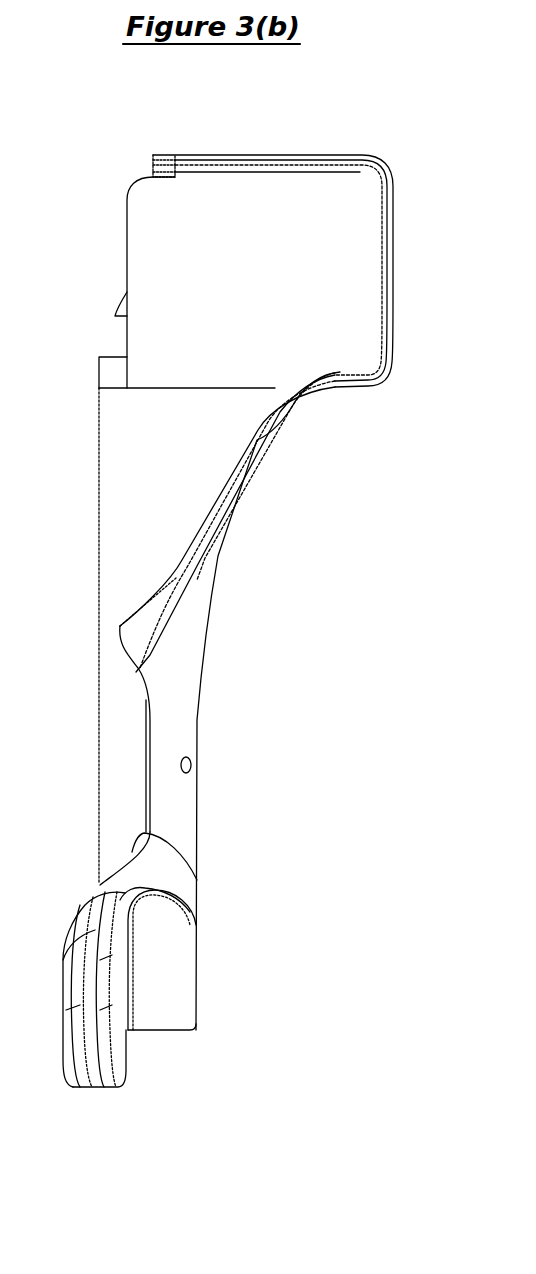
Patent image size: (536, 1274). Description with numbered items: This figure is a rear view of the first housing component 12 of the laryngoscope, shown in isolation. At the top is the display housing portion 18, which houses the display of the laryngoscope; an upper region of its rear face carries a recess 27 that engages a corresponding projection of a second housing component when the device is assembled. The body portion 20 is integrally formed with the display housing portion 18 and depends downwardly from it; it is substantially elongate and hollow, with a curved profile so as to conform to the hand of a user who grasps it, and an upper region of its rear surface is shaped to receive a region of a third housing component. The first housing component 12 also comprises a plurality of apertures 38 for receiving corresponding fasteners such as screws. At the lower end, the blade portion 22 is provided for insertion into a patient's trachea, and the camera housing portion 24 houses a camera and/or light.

The first housing component 12 is at (322, 119).
The display housing portion 18 is at (275, 345).
The recess 27 is at (172, 172).
The body portion 20 is at (122, 621).
The aperture 38 is at (190, 762).
The blade portion 22 is at (187, 971).
The camera housing portion 24 is at (98, 1062).